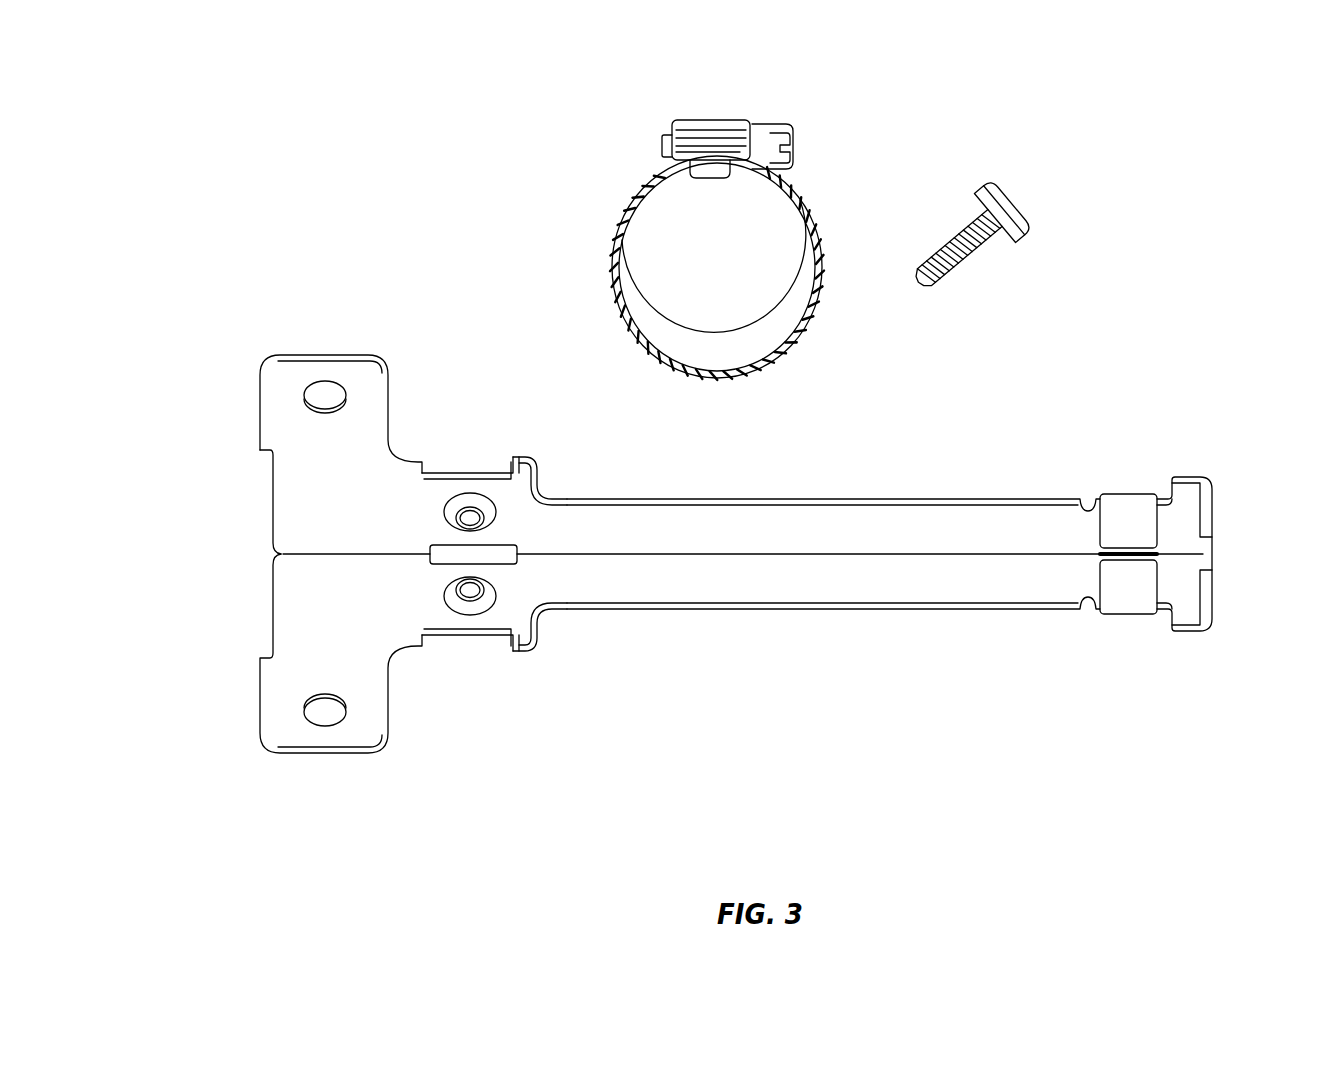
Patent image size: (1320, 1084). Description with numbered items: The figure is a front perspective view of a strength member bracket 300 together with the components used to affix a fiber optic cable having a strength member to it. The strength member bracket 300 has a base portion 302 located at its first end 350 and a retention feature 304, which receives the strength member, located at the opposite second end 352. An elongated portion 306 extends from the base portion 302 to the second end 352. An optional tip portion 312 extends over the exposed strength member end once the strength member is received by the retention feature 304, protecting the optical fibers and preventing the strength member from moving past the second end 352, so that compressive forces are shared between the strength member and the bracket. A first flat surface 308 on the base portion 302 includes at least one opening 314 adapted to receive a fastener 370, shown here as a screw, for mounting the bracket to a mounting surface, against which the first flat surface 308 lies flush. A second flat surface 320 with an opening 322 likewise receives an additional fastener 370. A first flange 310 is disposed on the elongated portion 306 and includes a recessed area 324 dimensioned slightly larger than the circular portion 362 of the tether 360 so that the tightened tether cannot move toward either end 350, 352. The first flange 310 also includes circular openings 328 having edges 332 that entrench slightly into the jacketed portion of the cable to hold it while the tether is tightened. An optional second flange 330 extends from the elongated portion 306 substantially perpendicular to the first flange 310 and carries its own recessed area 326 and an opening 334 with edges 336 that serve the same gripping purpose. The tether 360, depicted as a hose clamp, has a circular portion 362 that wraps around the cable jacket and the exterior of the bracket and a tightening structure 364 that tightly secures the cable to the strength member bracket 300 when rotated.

The strength member bracket 300 is at (993, 445).
The base portion 302 is at (237, 497).
The retention feature 304 is at (1123, 508).
The elongated portion 306 is at (413, 755).
The first flat surface 308 is at (345, 676).
The first flange 310 is at (543, 667).
The tip portion 312 is at (1222, 490).
The opening 314 is at (343, 727).
The second flat surface 320 is at (355, 438).
The opening 322 is at (330, 385).
The recessed area 324 is at (490, 660).
The recessed area 326 is at (481, 437).
The openings 328 is at (470, 594).
The second flange 330 is at (513, 433).
The edges 332 is at (457, 607).
The opening 334 is at (484, 512).
The edges 336 is at (497, 520).
The first end 350 is at (313, 790).
The second end 352 is at (1200, 663).
The tether 360 is at (598, 213).
The circular portion 362 is at (808, 320).
The tightening structure 364 is at (723, 130).
The fastener 370 is at (1010, 183).